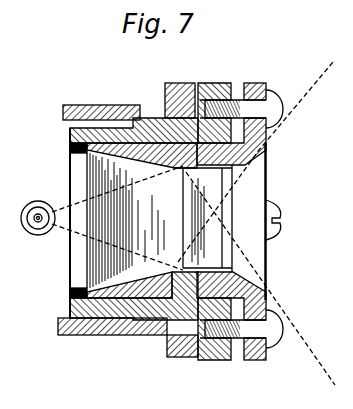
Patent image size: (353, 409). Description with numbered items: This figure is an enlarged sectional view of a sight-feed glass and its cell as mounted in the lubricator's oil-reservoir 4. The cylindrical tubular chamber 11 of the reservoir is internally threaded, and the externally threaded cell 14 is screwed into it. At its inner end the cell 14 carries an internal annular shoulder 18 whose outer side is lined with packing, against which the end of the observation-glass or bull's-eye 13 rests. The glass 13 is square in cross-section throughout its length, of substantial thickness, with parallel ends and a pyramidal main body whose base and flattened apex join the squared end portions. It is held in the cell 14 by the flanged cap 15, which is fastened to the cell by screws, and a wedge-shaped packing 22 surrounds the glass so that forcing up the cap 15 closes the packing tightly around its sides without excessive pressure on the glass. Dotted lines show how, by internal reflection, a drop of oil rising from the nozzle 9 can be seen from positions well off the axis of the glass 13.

The oil-reservoir 4 is at (167, 83).
The oil-feed nozzle 9 is at (38, 208).
The tubular chamber 11 is at (100, 104).
The observation-glass 13 is at (127, 220).
The cell 14 is at (150, 120).
The flanged cap 15 is at (267, 152).
The internal annular shoulder 18 is at (72, 146).
The packing 22 is at (191, 352).